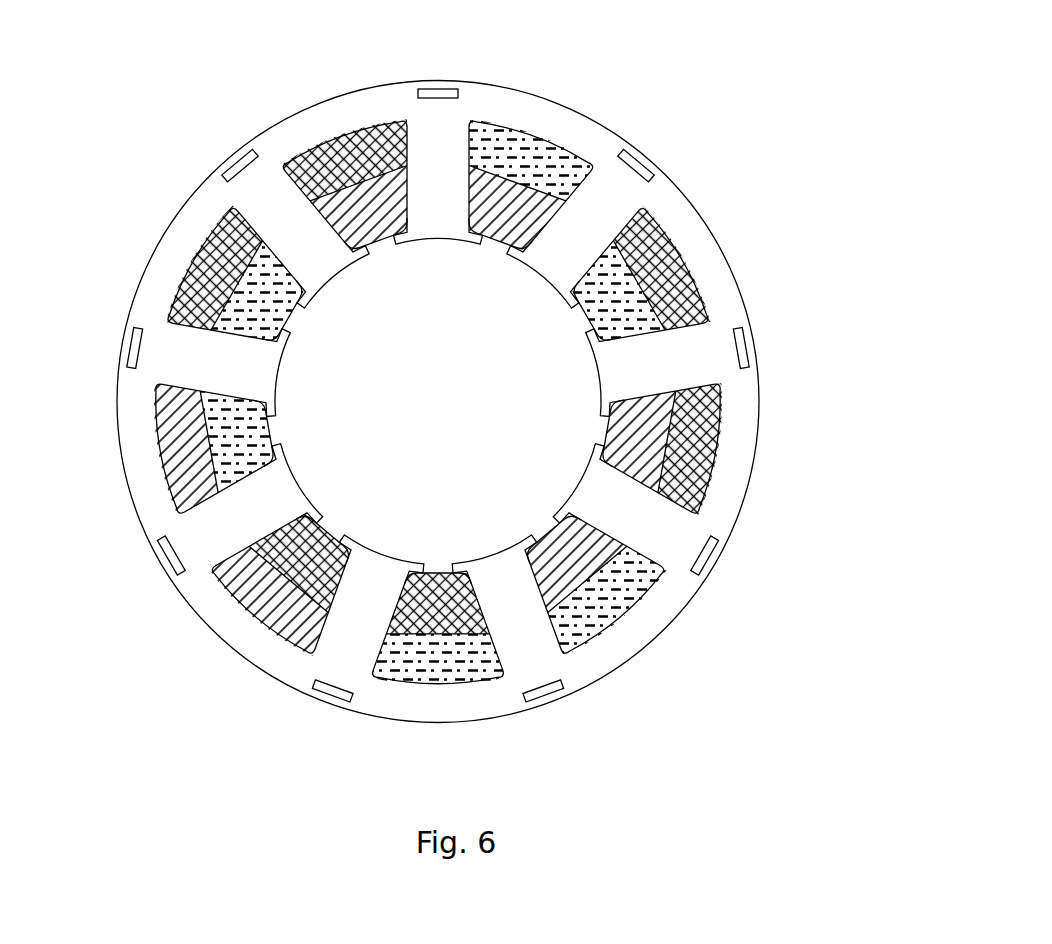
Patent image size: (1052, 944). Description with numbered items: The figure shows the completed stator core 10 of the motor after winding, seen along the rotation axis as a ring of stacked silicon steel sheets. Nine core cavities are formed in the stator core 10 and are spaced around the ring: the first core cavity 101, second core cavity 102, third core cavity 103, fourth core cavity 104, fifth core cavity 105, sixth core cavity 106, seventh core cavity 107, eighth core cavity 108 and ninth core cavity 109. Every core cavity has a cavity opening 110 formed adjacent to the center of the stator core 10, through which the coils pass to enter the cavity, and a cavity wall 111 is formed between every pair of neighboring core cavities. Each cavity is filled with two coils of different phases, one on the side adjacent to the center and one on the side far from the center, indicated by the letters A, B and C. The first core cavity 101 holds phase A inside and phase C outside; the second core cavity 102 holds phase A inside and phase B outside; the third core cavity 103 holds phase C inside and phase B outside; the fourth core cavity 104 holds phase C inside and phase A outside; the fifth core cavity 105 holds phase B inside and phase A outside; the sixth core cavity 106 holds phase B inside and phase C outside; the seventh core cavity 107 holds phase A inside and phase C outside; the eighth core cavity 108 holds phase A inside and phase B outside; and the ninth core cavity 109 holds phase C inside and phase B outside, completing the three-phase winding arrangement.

The stator core 10 is at (789, 35).
The first core cavity 101 is at (540, 123).
The second core cavity 102 is at (342, 132).
The third core cavity 103 is at (188, 253).
The fourth core cavity 104 is at (153, 456).
The fifth core cavity 105 is at (250, 627).
The sixth core cavity 106 is at (439, 687).
The seventh core cavity 107 is at (627, 623).
The eighth core cavity 108 is at (727, 451).
The ninth core cavity 109 is at (697, 252).
The cavity opening 110 is at (493, 251).
The cavity wall 111 is at (438, 142).